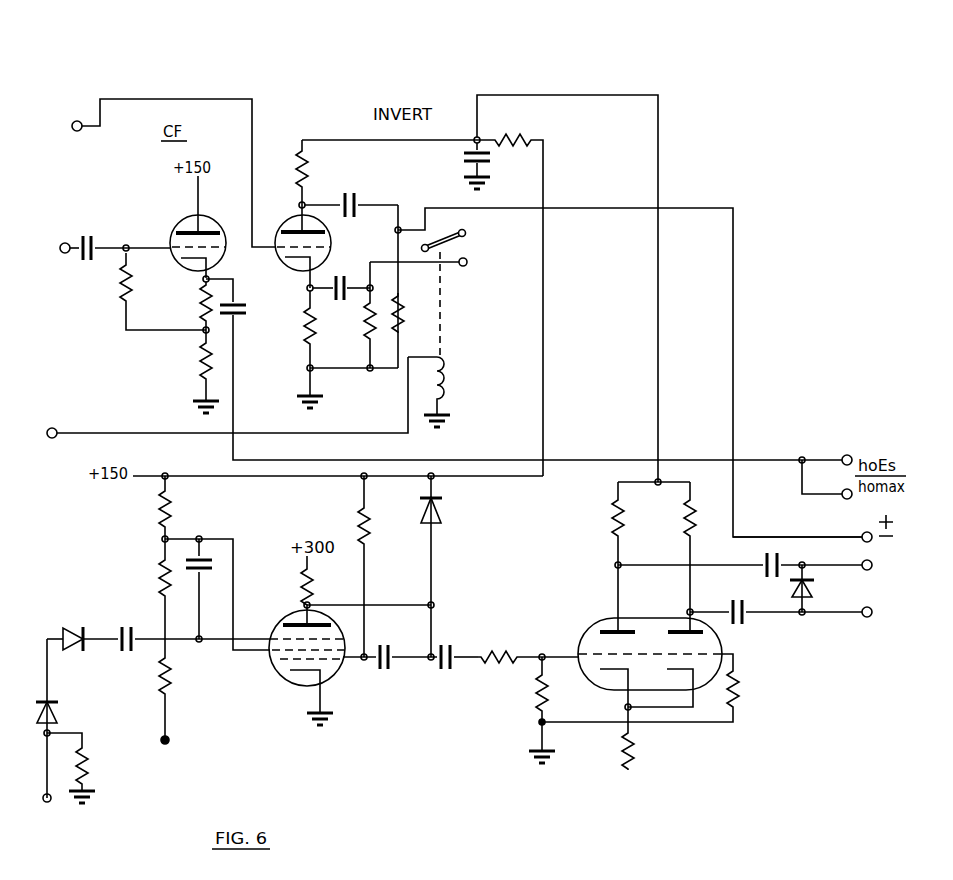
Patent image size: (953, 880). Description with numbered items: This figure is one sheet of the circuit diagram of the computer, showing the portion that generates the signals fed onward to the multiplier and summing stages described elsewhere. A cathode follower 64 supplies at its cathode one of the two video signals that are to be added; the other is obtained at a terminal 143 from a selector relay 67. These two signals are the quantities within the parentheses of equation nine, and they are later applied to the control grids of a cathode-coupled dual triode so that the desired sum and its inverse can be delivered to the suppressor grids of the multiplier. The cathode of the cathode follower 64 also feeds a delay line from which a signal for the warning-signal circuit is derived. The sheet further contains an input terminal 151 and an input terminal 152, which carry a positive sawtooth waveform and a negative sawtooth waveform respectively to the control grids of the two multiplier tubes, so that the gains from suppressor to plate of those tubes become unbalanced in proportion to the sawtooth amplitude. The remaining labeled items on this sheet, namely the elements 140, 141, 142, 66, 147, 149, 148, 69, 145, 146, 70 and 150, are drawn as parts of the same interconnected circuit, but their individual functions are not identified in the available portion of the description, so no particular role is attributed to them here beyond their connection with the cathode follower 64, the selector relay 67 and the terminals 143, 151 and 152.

The input terminal 140 is at (60, 248).
The KE_D input terminal 141 is at (78, 121).
The cathode follower 64 is at (170, 241).
The inverter tube 142 is at (331, 243).
The coupling capacitor 66 is at (341, 201).
The selector relay 67 is at (467, 262).
The terminal 143 is at (864, 533).
The capacitor 147 is at (175, 538).
The trigger coupling capacitor 149 is at (120, 631).
The trigger input terminal 148 is at (43, 797).
The phantastron 69 is at (289, 690).
The phantastron tube 145 is at (339, 667).
The coupling capacitor 146 is at (390, 668).
The sweep inverter 70 is at (464, 709).
The sweep inverter tube 150 is at (597, 624).
The input terminal 151 is at (862, 561).
The input terminal 152 is at (825, 614).